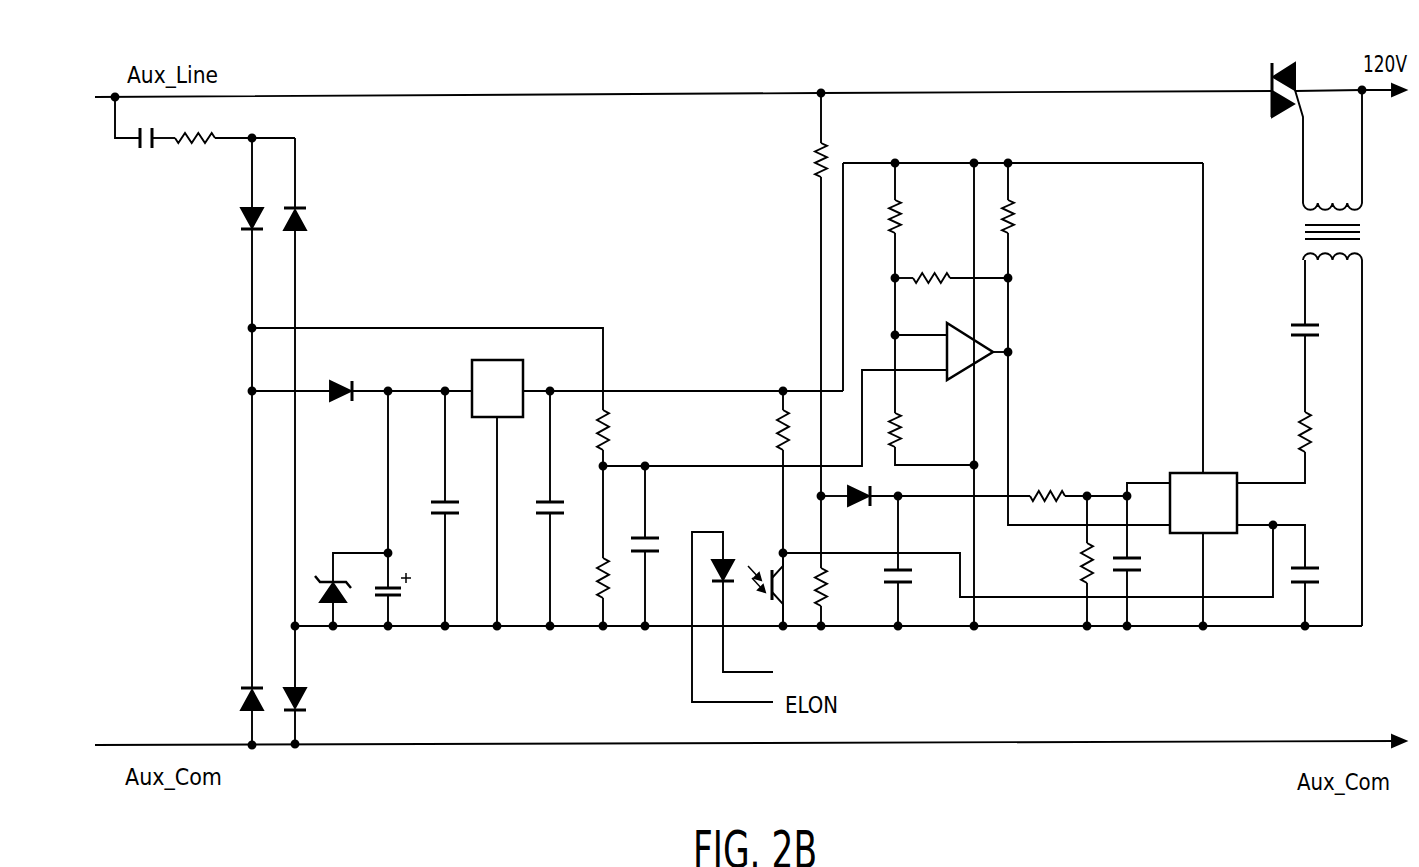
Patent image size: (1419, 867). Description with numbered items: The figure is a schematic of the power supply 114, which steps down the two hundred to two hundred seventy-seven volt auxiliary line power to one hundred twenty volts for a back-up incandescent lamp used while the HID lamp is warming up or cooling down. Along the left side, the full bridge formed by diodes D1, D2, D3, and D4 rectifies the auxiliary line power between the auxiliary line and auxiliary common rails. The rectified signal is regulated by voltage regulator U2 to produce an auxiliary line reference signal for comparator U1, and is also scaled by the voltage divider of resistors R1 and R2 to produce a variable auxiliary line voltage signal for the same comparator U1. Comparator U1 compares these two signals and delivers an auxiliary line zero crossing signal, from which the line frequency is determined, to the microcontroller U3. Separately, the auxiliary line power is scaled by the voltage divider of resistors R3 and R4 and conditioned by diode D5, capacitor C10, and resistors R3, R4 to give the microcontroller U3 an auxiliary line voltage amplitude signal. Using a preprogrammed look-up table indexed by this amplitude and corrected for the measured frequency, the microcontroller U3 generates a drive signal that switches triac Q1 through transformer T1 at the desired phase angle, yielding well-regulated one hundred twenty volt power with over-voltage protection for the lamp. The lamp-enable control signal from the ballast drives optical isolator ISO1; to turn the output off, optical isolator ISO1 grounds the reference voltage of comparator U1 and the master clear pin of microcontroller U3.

The 120V power supply 114 is at (648, 121).
The diode D1 is at (234, 221).
The diode D2 is at (307, 221).
The diode D3 is at (234, 701).
The diode D4 is at (307, 701).
The diode D5 is at (860, 513).
The resistor R1 is at (619, 430).
The resistor R2 is at (587, 580).
The resistor R3 is at (925, 322).
The resistor R4 is at (954, 574).
The capacitor C10 is at (919, 575).
The comparator U1 is at (980, 345).
The voltage regulator U2 is at (514, 406).
The 120V microcontroller U3 is at (1220, 516).
The optical isolator ISO1 is at (748, 550).
The triac Q1 is at (1269, 78).
The transformer T1 is at (1348, 231).